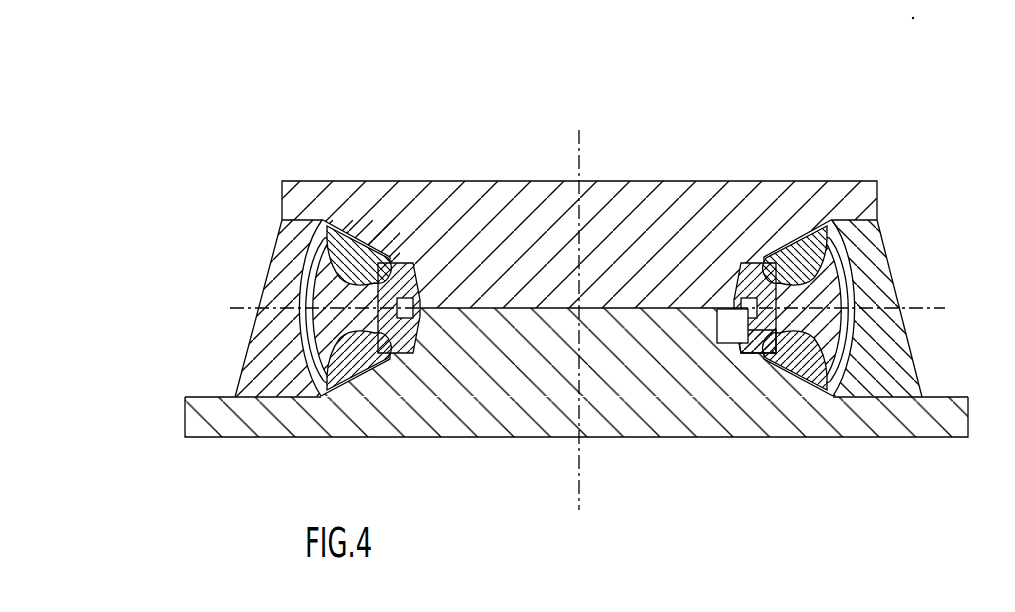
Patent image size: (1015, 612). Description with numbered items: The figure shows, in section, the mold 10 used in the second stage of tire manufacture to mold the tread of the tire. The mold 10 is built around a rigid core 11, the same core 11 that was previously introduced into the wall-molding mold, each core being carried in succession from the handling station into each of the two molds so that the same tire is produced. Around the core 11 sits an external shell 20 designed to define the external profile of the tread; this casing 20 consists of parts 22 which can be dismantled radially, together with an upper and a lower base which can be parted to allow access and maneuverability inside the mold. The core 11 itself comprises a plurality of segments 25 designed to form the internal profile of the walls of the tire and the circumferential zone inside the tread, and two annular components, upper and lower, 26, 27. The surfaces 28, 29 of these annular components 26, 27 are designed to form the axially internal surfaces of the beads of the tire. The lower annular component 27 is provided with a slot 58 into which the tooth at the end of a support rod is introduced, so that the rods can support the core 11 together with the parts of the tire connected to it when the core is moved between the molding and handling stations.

The mold 10 is at (578, 34).
The rigid core 11 is at (927, 222).
The external shell 20 is at (362, 363).
The parts 22 is at (950, 353).
The segments 25 is at (880, 492).
The upper annular component 26 is at (773, 492).
The lower annular component 27 is at (752, 265).
The surface 28 is at (823, 487).
The surface 29 is at (823, 127).
The slot 58 is at (708, 475).